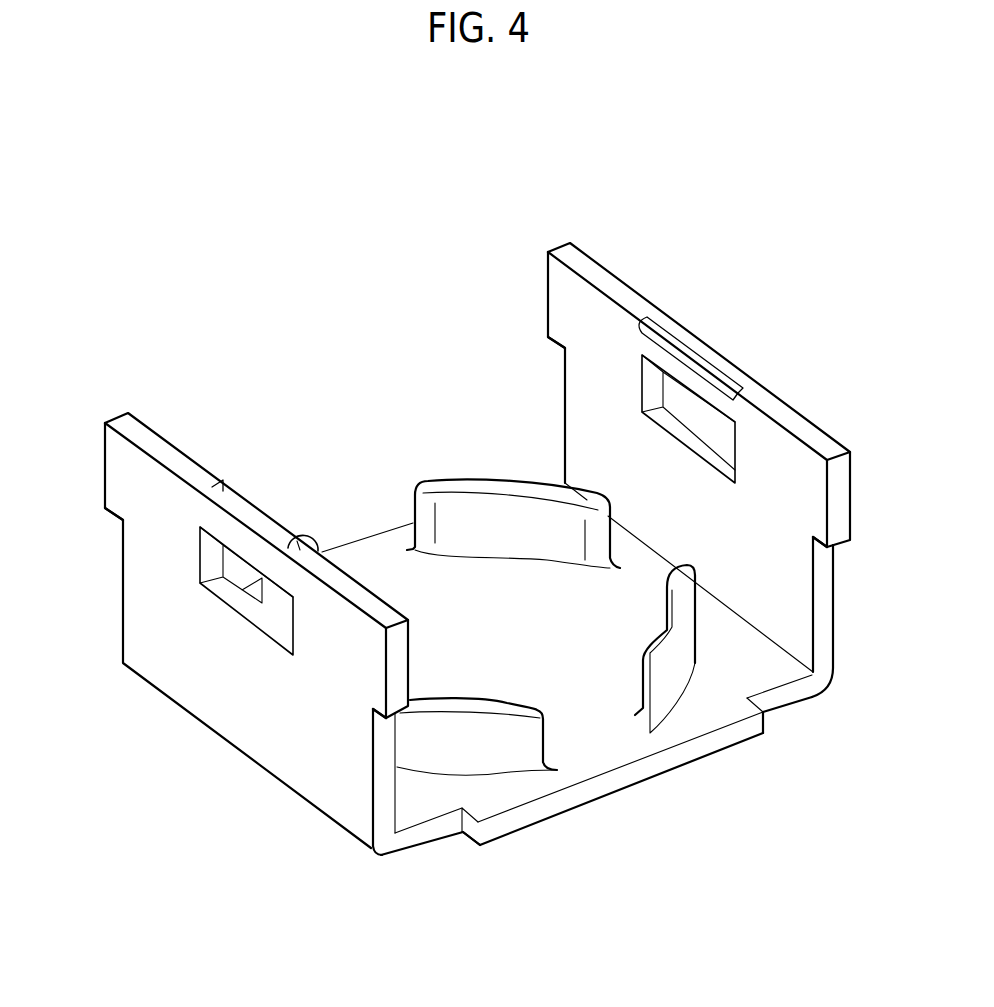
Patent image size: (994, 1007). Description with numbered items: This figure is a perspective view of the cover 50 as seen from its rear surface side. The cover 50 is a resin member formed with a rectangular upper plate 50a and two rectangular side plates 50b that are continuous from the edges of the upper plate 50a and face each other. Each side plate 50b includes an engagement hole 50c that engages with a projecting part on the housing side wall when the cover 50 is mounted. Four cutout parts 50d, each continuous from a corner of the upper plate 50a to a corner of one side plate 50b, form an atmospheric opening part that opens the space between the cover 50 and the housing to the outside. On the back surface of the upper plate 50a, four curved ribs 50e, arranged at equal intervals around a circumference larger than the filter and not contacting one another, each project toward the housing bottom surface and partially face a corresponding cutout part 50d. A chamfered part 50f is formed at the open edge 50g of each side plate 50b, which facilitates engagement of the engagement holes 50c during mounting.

The cover 50 is at (687, 166).
The upper plate 50a is at (623, 774).
The side plate 50b is at (816, 488).
The engagement hole 50c is at (713, 445).
The cutout part 50d is at (548, 397).
The rib 50e is at (297, 540).
The chamfered part 50f is at (680, 352).
The open edge 50g is at (562, 248).